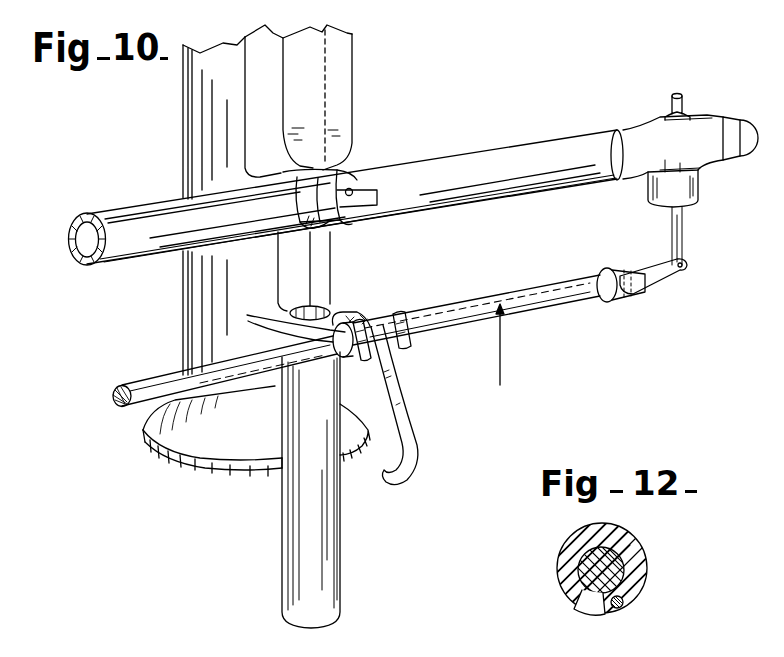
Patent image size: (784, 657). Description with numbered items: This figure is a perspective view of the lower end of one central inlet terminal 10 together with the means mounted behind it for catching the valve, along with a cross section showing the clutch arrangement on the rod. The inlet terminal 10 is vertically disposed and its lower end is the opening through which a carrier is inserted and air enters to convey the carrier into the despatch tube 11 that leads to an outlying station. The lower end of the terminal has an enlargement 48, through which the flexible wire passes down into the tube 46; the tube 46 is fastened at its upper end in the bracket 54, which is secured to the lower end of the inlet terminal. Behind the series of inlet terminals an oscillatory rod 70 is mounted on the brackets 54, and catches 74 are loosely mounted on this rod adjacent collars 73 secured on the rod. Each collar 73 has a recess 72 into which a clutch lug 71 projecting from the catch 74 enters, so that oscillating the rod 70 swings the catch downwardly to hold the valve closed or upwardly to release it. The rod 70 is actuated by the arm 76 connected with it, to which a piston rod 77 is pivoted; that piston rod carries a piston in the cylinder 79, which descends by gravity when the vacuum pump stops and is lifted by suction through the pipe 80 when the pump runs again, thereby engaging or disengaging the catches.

In FIG. 10, the central inlet terminal 10 is at (193, 297).
In FIG. 10, the despatch tube 11 is at (278, 356).
In FIG. 10, the tube 46 is at (293, 527).
In FIG. 10, the enlargement of the inlet terminal 48 is at (343, 97).
In FIG. 10, the bracket 54 is at (340, 180).
In FIG. 10, the oscillatory rod 70 is at (523, 303).
In FIG. 12, the oscillatory rod 70 is at (560, 570).
In FIG. 12, the clutch lug 71 is at (619, 609).
In FIG. 12, the recess 72 is at (590, 612).
In FIG. 10, the collar 73 is at (357, 358).
In FIG. 12, the collar 73 is at (647, 570).
In FIG. 10, the catch 74 is at (410, 437).
In FIG. 10, the arm 76 is at (660, 273).
In FIG. 10, the piston rod 77 is at (678, 97).
In FIG. 10, the cylinder 79 is at (684, 190).
In FIG. 10, the pipe 80 is at (505, 157).